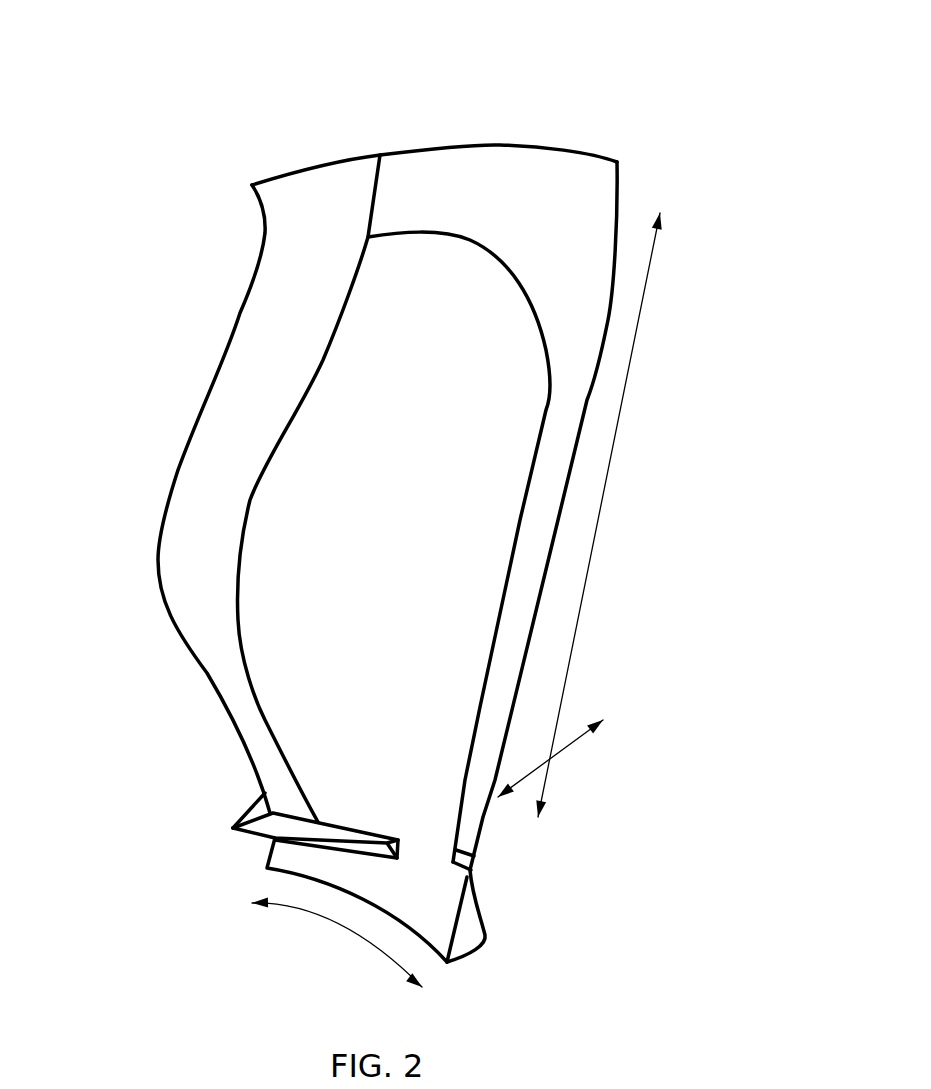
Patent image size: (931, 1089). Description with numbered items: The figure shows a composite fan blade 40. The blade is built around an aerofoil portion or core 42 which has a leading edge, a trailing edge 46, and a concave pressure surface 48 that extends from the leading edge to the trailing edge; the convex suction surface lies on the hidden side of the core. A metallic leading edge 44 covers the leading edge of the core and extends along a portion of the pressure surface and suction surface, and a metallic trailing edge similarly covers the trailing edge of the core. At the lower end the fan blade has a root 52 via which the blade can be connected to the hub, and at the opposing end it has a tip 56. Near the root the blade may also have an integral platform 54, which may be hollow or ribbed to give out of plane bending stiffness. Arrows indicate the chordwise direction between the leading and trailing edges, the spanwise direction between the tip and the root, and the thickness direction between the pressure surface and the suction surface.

The fan blade 40 is at (673, 92).
The aerofoil portion or core 42 is at (320, 450).
The metallic leading edge 44 is at (158, 560).
The trailing edge 46 is at (552, 548).
The concave pressure surface 48 is at (306, 680).
The root 52 is at (467, 923).
The integral platform 54 is at (240, 825).
The tip 56 is at (418, 147).